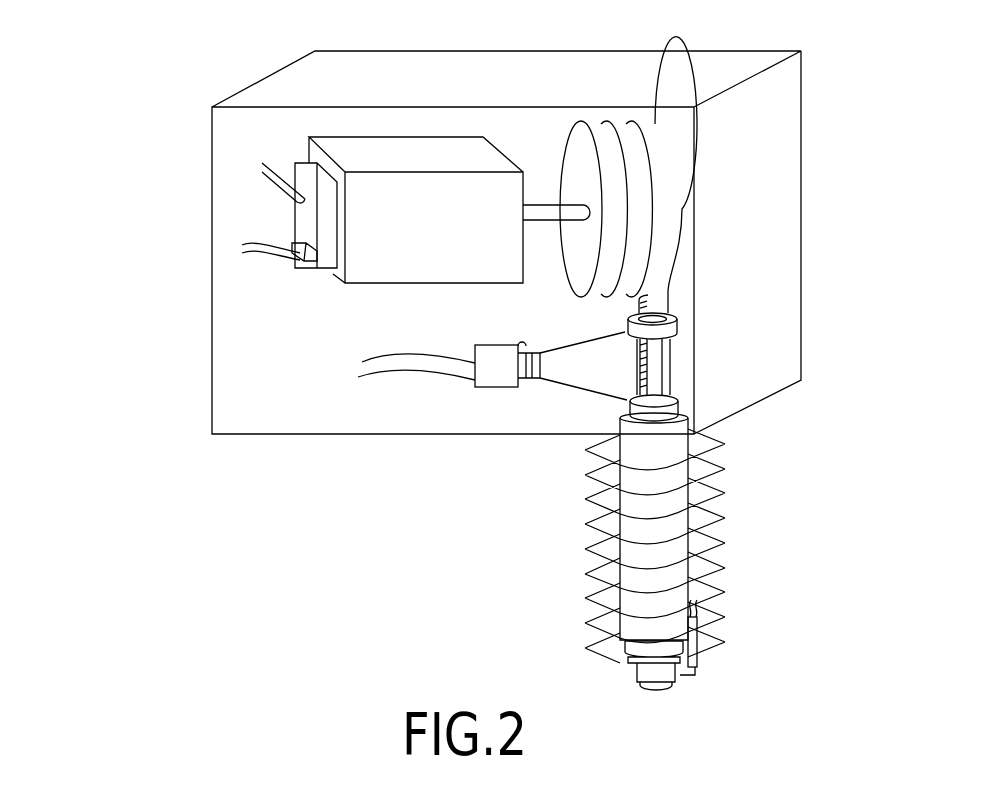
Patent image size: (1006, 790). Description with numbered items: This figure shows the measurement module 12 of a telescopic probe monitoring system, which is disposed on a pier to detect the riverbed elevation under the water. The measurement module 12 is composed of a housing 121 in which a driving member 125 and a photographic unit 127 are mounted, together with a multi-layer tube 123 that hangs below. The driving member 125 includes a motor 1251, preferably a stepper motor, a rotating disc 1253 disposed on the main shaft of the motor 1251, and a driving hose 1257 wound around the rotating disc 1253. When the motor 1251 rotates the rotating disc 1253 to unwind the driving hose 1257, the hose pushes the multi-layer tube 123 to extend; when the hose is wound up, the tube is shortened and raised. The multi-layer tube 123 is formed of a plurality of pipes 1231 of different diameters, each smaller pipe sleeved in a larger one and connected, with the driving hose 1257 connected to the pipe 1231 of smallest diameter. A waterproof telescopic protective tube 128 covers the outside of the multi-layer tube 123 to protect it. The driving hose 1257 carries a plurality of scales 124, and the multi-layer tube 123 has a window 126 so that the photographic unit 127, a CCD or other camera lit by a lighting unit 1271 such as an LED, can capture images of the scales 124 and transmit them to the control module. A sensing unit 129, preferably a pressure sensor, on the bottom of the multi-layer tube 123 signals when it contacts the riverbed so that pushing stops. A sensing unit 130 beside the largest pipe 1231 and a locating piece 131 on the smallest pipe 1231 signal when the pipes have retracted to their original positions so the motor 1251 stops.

The measurement module 12 is at (110, 112).
The housing 121 is at (785, 203).
The multi-layer tube 123 is at (788, 490).
The scales 124 is at (647, 360).
The driving member 125 is at (552, 113).
The motor 1251 is at (417, 152).
The rotating disc 1253 is at (578, 152).
The driving hose 1257 is at (640, 122).
The window 126 is at (673, 370).
The photographic unit 127 is at (480, 415).
The lighting unit 1271 is at (525, 346).
The waterproof telescopic protective tube 128 is at (717, 550).
The pipes 1231 is at (600, 533).
The sensing unit 129 is at (663, 688).
The sensing unit 130 is at (693, 610).
The locating piece 131 is at (697, 672).